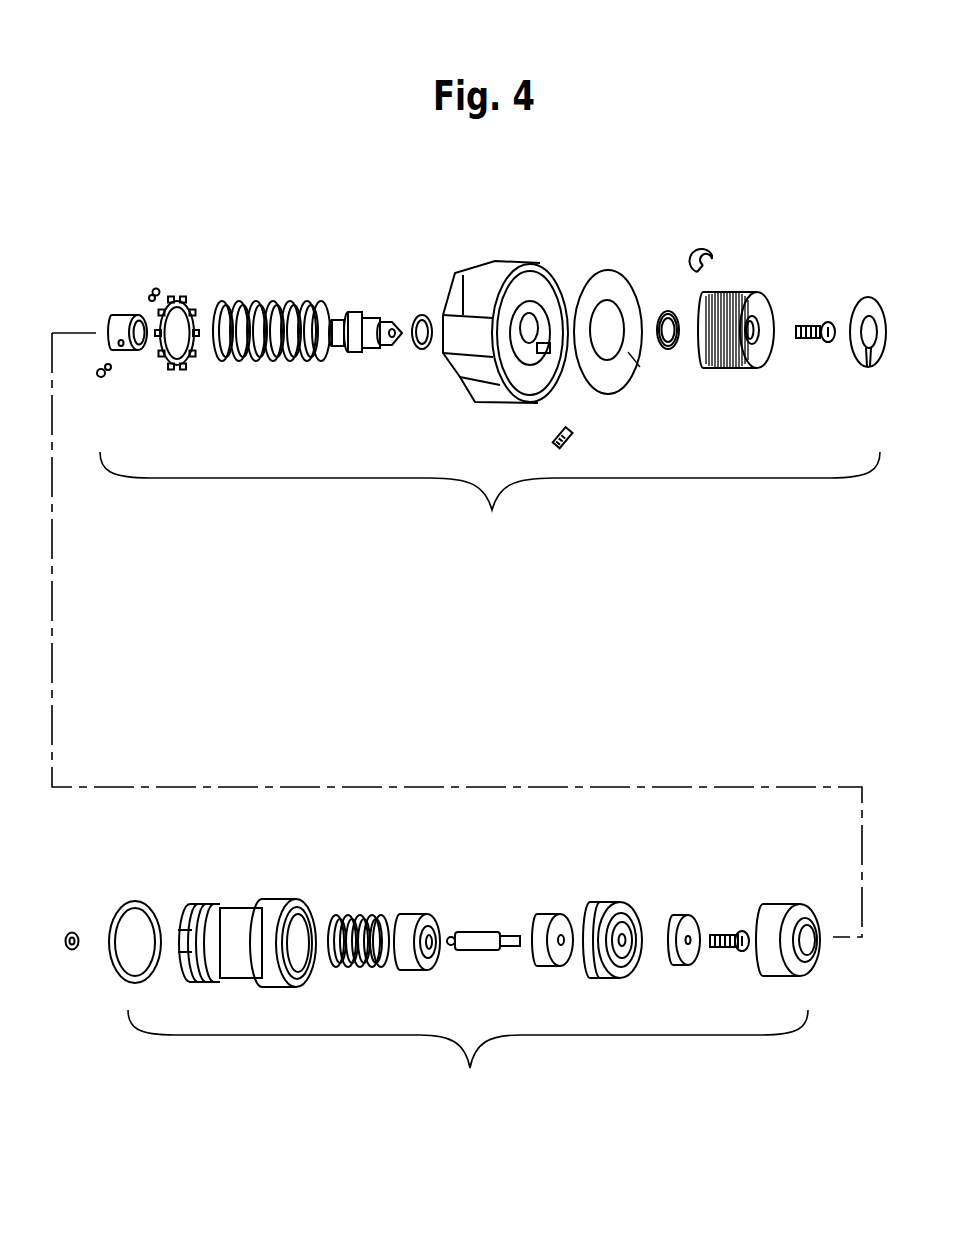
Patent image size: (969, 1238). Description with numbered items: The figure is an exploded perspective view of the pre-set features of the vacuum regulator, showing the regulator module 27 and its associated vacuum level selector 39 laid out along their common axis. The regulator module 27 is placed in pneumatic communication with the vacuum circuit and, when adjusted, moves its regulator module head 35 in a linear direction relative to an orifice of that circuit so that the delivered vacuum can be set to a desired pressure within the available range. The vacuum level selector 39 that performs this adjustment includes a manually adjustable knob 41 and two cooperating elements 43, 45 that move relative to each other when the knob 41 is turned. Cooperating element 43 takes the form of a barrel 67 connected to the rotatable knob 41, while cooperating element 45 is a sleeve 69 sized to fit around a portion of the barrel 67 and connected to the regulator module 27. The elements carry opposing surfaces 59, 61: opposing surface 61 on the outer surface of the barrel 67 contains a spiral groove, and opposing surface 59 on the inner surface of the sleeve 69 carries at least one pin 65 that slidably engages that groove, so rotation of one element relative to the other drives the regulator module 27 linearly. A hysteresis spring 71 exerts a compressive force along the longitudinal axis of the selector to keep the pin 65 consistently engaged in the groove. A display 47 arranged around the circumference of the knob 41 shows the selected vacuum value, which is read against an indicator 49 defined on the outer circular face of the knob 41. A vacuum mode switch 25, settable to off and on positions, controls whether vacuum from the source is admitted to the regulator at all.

The vacuum mode switch 25 is at (505, 262).
The regulator module 27 is at (468, 1054).
The regulator module head 35 is at (475, 928).
The vacuum level selector 39 is at (490, 499).
The manually adjustable knob 41 is at (743, 293).
The cooperating element 43 is at (380, 304).
The cooperating element 45 is at (133, 318).
The display 47 is at (628, 273).
The indicator 49 is at (857, 300).
The opposing surface 59 is at (141, 318).
The opposing surface 61 is at (338, 317).
The pin 65 is at (160, 290).
The barrel 67 is at (380, 348).
The sleeve 69 is at (121, 346).
The hysteresis spring 71 is at (294, 303).